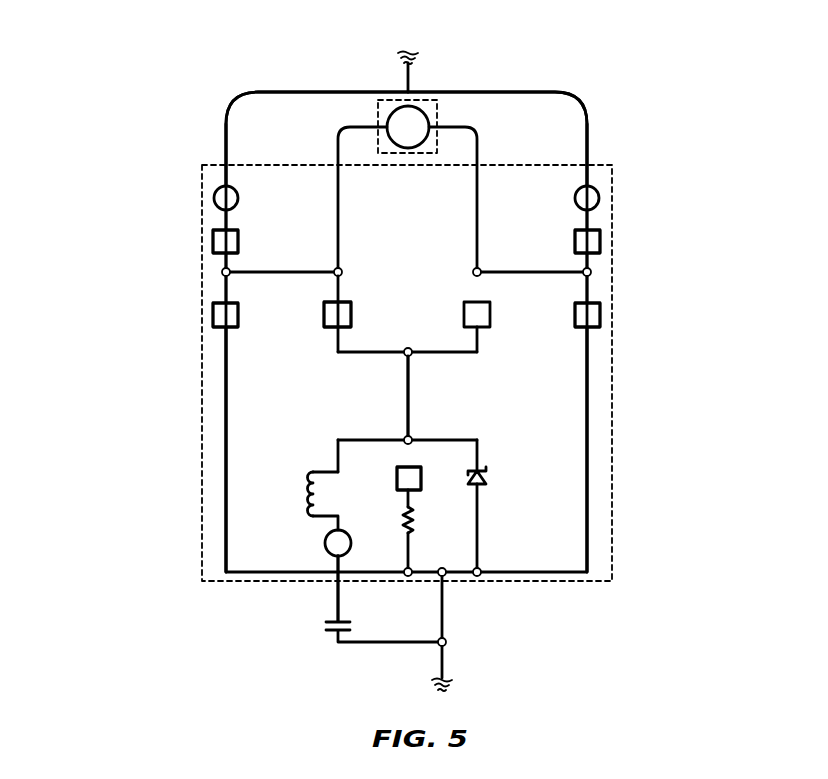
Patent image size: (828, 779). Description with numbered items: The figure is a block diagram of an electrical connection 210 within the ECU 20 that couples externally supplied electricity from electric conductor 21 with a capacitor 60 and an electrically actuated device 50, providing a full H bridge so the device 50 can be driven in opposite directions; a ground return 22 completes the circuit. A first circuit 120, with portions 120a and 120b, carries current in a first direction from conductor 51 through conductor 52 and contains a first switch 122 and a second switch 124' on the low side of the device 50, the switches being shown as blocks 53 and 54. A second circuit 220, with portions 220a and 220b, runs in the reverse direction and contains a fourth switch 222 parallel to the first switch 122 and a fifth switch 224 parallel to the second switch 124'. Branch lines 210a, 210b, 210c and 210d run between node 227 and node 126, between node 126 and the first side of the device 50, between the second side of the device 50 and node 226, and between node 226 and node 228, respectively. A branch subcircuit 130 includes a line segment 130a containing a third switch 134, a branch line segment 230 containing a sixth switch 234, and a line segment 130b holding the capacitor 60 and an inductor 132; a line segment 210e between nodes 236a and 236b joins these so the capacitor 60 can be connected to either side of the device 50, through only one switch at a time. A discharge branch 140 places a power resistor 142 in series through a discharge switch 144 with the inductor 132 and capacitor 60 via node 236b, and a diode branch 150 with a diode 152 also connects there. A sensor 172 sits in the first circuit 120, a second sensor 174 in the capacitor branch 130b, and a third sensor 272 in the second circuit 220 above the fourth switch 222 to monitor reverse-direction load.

The ECU 20 is at (616, 174).
The electric conductor 21 is at (408, 73).
The ground 22 is at (442, 660).
The electrically actuated device 50 is at (440, 118).
The conductor 51 is at (226, 260).
The conductor 52 is at (587, 287).
The third switch 53 is at (587, 260).
The fourth switch 54 is at (226, 287).
The capacitor 60 is at (330, 633).
The first circuit 120 is at (224, 111).
The first conductor upper portion 120a is at (226, 137).
The first conductor lower portion 120b is at (587, 420).
The first switch 122 is at (213, 238).
The switch element 124' is at (631, 321).
The node 126 is at (342, 274).
The branch subcircuit 130 is at (326, 336).
The line segment 130a is at (338, 290).
The line segment 130b is at (325, 462).
The inductor 132 is at (306, 508).
The third switch 134 is at (351, 314).
The discharge branch 140 is at (415, 499).
The power resistor 142 is at (410, 513).
The discharge switch 144 is at (397, 478).
The diode branch 150 is at (485, 500).
The diode 152 is at (488, 477).
The sensor 172 is at (214, 198).
The second sensor 174 is at (325, 542).
The electrical connection 210 is at (176, 61).
The branch line 210a is at (280, 272).
The branch line 210b is at (338, 203).
The branch line 210c is at (477, 215).
The branch line 210d is at (535, 272).
The line segment 210e is at (404, 412).
The second circuit 220 is at (589, 111).
The second conductor upper portion 220a is at (587, 140).
The second conductor lower portion 220b is at (226, 422).
The fourth switch 222 is at (600, 240).
The fifth switch 224 is at (213, 313).
The node 226 is at (477, 268).
The node 227 is at (222, 277).
The node 228 is at (591, 277).
The branch line segment 230 is at (486, 336).
The sixth switch 234 is at (445, 351).
The node 236a is at (411, 355).
The node 236b is at (411, 437).
The third sensor 272 is at (599, 198).